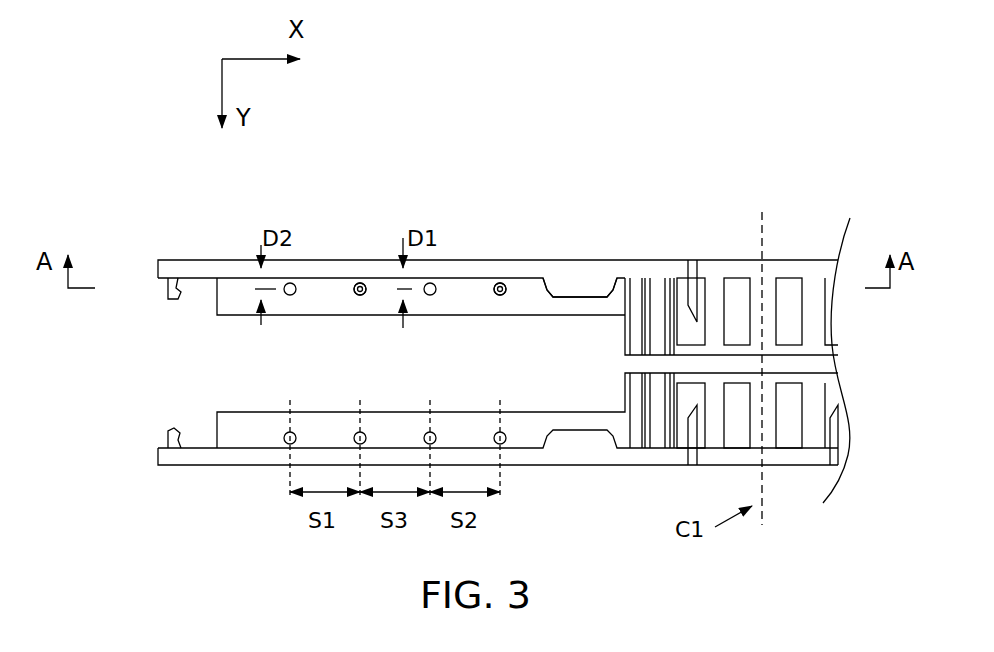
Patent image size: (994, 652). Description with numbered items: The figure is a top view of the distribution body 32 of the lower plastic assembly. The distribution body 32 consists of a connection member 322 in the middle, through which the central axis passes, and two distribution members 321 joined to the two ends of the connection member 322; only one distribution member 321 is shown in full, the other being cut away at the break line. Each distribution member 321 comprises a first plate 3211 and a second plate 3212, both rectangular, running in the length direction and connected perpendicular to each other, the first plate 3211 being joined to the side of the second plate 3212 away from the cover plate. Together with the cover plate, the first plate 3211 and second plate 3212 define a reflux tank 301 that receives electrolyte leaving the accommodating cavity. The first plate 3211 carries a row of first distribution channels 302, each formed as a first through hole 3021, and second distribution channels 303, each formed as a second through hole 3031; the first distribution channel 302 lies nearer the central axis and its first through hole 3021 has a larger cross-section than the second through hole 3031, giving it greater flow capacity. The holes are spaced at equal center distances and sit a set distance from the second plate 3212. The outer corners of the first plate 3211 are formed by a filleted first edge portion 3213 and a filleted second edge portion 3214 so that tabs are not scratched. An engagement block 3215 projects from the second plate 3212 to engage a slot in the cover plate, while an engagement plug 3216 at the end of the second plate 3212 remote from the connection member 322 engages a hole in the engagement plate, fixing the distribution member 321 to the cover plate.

The distribution body 32 is at (555, 89).
The distribution member 321 is at (435, 312).
The connection member 322 is at (790, 268).
The first plate 3211 is at (245, 432).
The second plate 3212 is at (182, 268).
The first edge portion 3213 is at (387, 315).
The second edge portion 3214 is at (215, 428).
The engagement block 3215 is at (585, 290).
The engagement plug 3216 is at (165, 437).
The reflux tank 301 is at (462, 312).
The first distribution channel 302 is at (500, 278).
The first through hole 3021 is at (500, 289).
The second distribution channel 303 is at (356, 278).
The second through hole 3031 is at (360, 289).